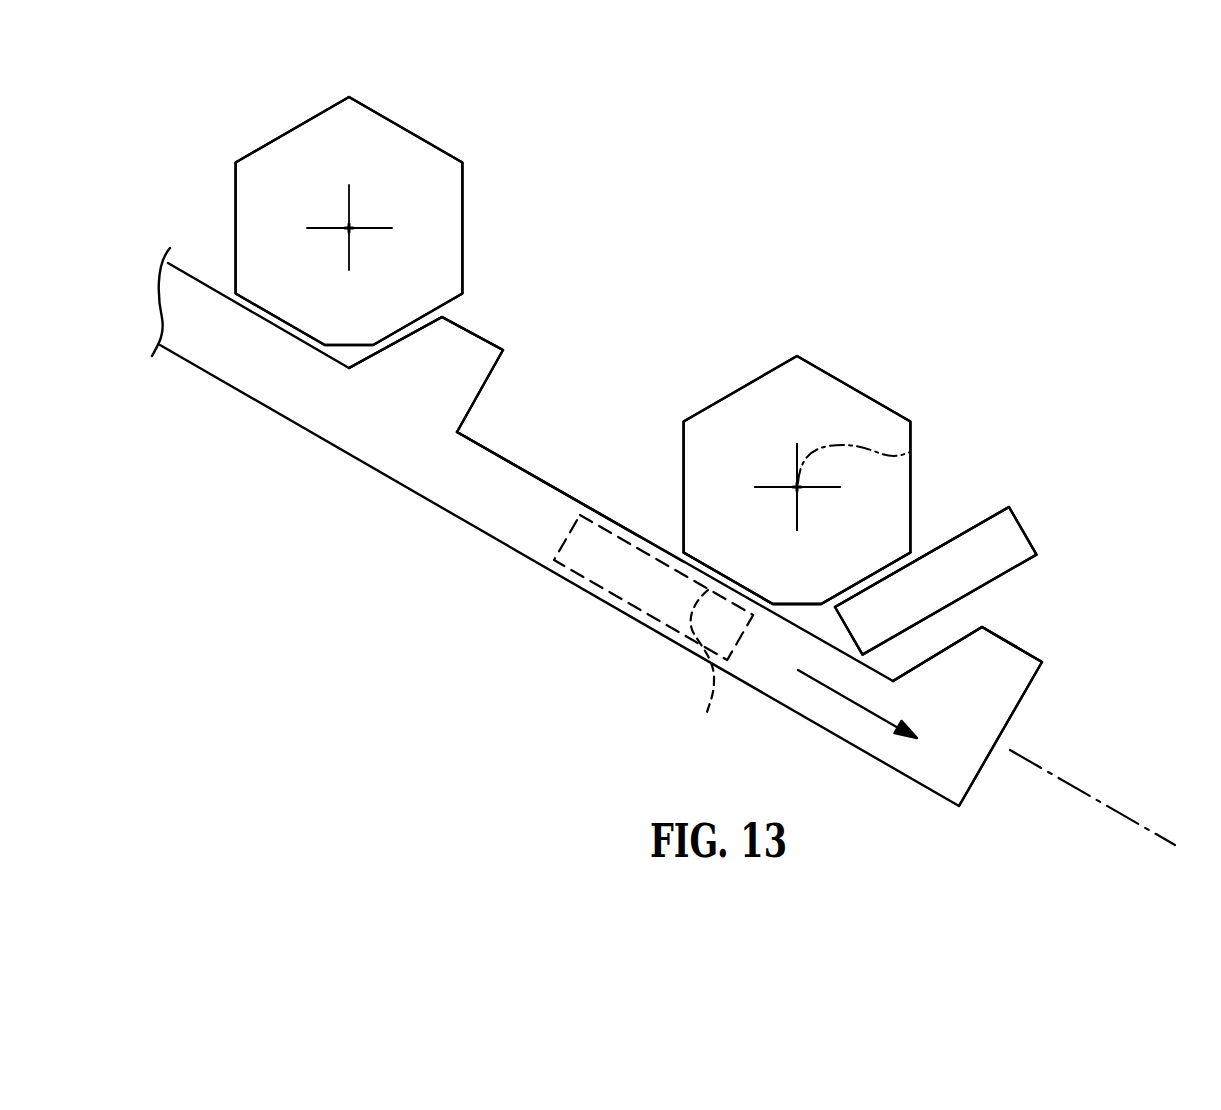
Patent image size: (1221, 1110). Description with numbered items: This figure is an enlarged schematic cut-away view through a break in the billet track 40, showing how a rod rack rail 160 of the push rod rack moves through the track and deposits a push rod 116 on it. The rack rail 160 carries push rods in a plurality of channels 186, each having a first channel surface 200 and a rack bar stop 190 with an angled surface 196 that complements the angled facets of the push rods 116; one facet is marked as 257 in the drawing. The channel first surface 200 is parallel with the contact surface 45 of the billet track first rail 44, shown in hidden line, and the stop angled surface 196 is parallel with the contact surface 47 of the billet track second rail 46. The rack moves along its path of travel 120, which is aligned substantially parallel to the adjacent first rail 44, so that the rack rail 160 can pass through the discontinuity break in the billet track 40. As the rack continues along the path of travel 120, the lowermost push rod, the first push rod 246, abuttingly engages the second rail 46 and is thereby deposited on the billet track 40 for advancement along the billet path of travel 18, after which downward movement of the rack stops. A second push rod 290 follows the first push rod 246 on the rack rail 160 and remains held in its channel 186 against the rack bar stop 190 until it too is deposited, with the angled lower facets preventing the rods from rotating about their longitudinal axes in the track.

The rod rack rail 160 is at (493, 567).
The angled surface 196 is at (471, 346).
The rack bar stop 190 is at (474, 365).
The push rod 116 is at (449, 125).
The second push rod 290 is at (463, 185).
The first push rod 246 is at (893, 413).
The billet path of travel 18 is at (910, 452).
The channel 186 is at (621, 441).
The first channel surface 200 is at (543, 480).
The nut flat 257 is at (700, 560).
The first rail 44 is at (648, 593).
The contact surface 45 is at (704, 668).
The billet track 40 is at (1028, 475).
The second rail 46 is at (1010, 550).
The contact surface 47 is at (993, 517).
The path of travel 120 is at (1120, 812).